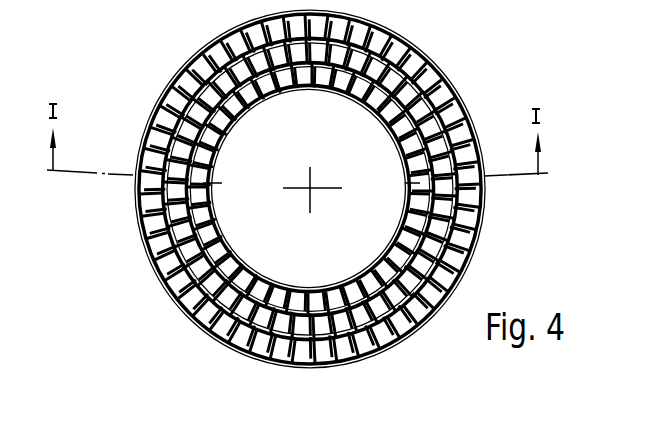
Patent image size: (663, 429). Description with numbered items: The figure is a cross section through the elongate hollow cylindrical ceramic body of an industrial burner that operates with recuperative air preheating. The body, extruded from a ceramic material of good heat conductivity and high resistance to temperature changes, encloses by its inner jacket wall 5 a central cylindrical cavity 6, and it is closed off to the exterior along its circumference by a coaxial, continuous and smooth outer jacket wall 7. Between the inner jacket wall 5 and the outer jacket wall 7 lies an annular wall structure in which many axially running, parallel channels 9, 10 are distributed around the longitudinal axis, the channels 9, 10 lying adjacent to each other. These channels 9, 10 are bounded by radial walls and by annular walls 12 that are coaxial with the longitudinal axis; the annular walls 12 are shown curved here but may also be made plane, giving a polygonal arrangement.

The inner jacket wall 5 is at (226, 129).
The cylindrical cavity 6 is at (367, 164).
The outer jacket wall 7 is at (467, 103).
The channel 9 is at (146, 124).
The channel 10 is at (153, 112).
The annular wall 12 is at (170, 83).